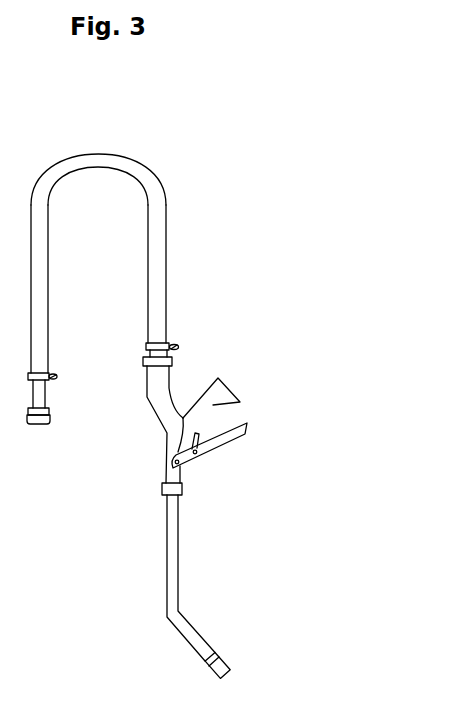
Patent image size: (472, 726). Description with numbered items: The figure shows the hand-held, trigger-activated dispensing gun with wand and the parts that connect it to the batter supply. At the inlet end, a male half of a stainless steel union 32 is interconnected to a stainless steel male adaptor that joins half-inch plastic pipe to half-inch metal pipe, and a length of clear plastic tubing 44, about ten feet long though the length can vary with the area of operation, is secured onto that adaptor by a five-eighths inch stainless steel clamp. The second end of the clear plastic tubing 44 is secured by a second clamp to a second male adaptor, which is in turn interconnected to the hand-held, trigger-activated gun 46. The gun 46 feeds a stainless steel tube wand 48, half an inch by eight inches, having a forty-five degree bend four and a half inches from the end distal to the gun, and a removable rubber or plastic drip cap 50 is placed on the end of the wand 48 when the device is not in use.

The male half of a stainless steel union 32 is at (47, 419).
The clear plastic tubing 44 is at (143, 183).
The hand-held, trigger-activated dispensing gun with wand 46 is at (236, 399).
The stainless steel tube wand 48 is at (173, 537).
The removable drip cap 50 is at (212, 675).